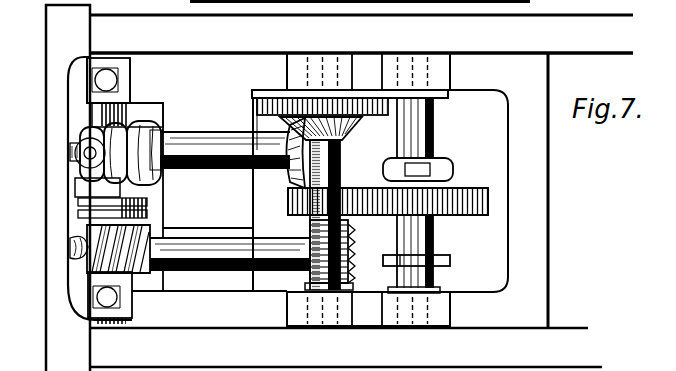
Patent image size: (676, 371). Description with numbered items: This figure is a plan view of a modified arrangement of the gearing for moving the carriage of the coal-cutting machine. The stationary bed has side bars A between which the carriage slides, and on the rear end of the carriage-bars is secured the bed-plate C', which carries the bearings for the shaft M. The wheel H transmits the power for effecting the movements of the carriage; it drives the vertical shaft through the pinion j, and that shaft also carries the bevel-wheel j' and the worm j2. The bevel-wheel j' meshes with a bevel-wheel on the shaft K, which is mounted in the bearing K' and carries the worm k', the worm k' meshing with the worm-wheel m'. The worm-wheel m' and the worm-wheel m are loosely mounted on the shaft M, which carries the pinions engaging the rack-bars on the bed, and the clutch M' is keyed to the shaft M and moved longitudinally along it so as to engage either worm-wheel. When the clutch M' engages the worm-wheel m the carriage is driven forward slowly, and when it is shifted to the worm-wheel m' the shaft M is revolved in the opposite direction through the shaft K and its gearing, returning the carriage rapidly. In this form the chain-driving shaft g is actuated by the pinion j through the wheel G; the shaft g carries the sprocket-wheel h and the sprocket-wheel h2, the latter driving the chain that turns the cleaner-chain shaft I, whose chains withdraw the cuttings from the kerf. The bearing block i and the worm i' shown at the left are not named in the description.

The side bars A is at (339, 187).
The bed-plate C' is at (292, 189).
The wheel H is at (270, 88).
The shaft K is at (225, 150).
The bearing K' is at (132, 146).
The worm k' is at (281, 156).
The bevel-wheel j' is at (322, 125).
The pinion j is at (304, 215).
The worm j2 is at (353, 250).
The wheel G is at (394, 201).
The chain-driving shaft g is at (434, 242).
The sprocket-wheel h is at (418, 169).
The sprocket-wheel h2 is at (452, 262).
The bearing i is at (299, 307).
The worm wheel i' is at (125, 260).
The cleaner-chain shaft I is at (215, 247).
The shaft M is at (117, 115).
The clutch M' is at (85, 197).
The worm-wheel m is at (56, 247).
The worm-wheel m' is at (52, 152).